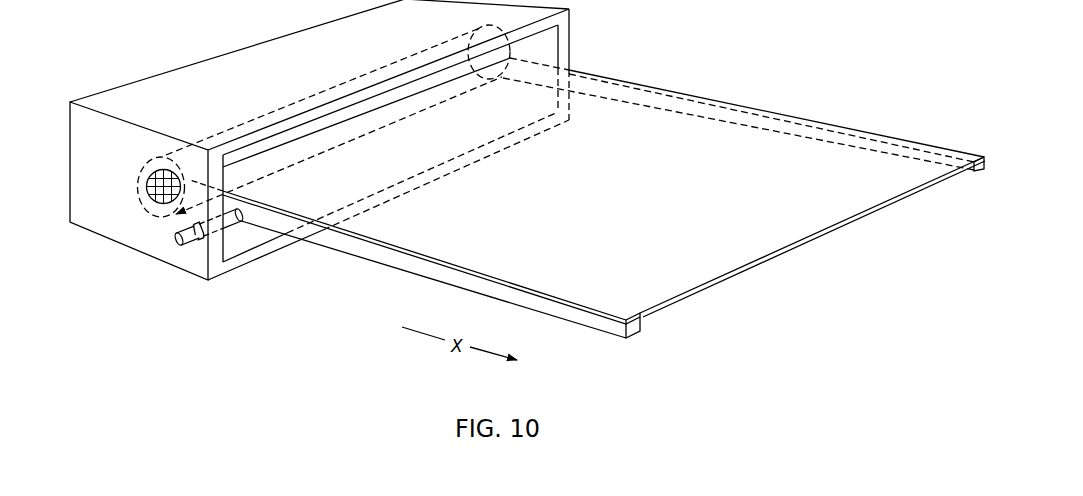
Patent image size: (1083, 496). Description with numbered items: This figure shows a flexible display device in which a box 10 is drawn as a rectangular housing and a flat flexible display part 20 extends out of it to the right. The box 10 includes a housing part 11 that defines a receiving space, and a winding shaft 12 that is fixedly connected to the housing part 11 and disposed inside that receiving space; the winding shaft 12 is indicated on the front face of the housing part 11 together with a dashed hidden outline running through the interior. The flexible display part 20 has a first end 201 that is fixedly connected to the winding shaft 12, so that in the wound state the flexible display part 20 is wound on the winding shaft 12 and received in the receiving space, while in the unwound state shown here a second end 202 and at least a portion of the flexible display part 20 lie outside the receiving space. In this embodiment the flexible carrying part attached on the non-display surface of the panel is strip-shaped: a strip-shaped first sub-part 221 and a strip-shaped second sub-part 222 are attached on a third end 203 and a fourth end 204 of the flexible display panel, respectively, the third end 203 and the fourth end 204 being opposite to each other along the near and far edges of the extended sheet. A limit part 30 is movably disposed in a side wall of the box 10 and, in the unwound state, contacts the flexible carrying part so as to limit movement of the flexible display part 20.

The box 10 is at (319, 147).
The housing part 11 is at (158, 237).
The winding shaft 12 is at (148, 192).
The flexible display part 20 is at (587, 216).
The first end 201 is at (188, 181).
The second end 202 is at (753, 262).
The third end 203 is at (480, 273).
The fourth end 204 is at (712, 97).
The first sub-part 221 is at (612, 328).
The second sub-part 222 is at (975, 170).
The limit part 30 is at (178, 247).